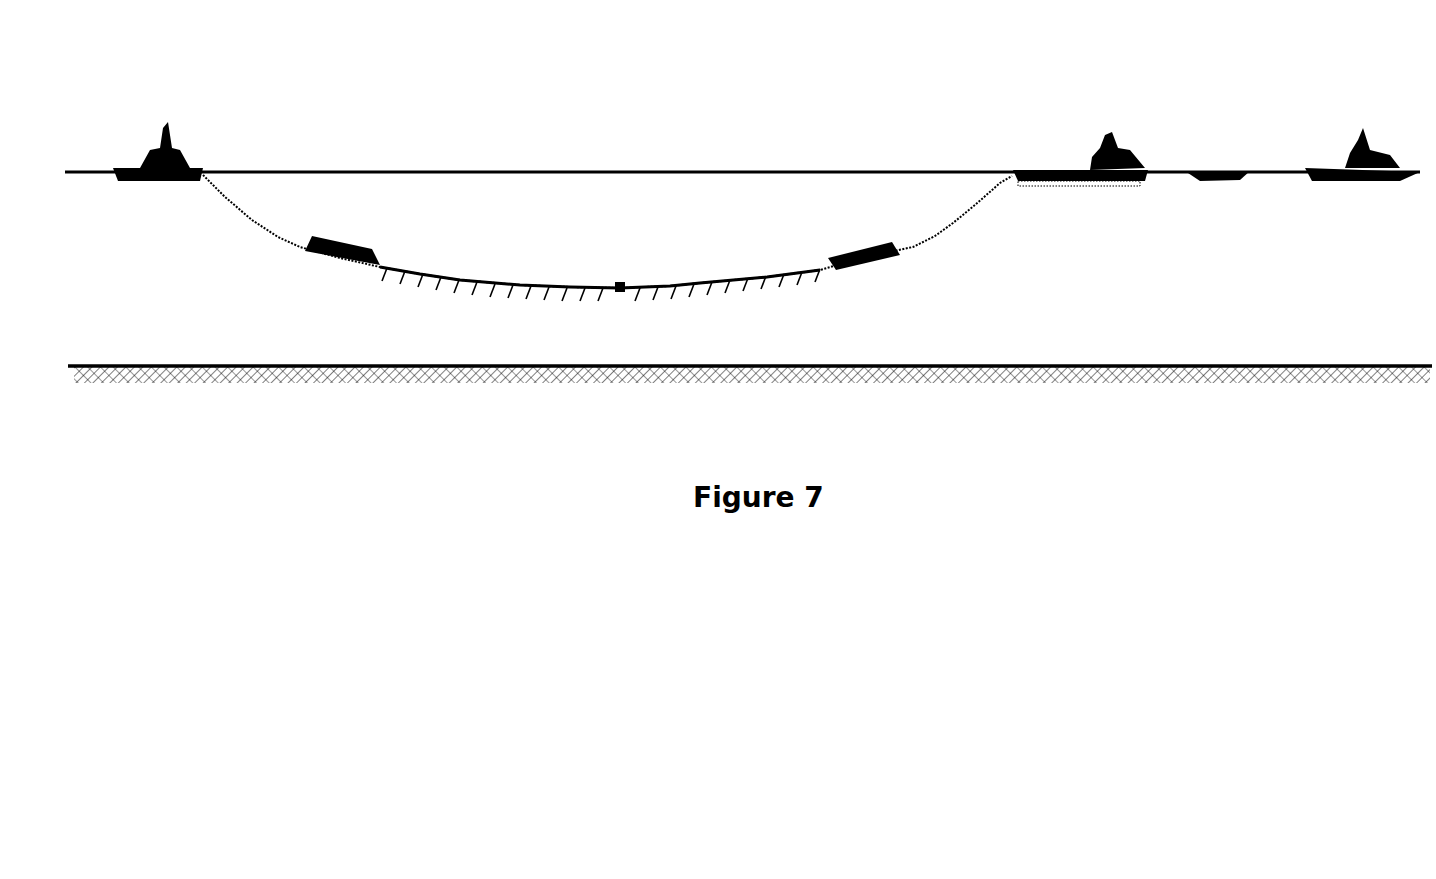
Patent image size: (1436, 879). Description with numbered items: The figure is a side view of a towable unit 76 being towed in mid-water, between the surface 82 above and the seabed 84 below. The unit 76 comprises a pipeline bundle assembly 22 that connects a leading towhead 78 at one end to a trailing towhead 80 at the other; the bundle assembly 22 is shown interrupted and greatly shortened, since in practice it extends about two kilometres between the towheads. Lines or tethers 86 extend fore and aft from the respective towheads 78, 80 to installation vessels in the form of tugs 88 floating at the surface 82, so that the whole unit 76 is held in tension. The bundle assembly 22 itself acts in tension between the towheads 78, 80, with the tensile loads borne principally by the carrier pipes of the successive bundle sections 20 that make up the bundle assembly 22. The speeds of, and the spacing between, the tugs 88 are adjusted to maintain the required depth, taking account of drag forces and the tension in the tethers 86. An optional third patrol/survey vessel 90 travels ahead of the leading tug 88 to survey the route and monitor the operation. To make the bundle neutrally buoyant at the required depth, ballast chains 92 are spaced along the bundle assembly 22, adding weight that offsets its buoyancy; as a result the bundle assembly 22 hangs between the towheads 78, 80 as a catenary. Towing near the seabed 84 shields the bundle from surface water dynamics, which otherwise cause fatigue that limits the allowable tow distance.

The bundle sections 20 is at (512, 284).
The pipeline bundle assembly 22 is at (621, 276).
The towable unit 76 is at (828, 116).
The leading towhead 78 is at (873, 259).
The trailing towhead 80 is at (335, 252).
The surface 82 is at (1217, 170).
The seabed 84 is at (1017, 368).
The tethers 86 is at (252, 222).
The tugs 88 is at (145, 166).
The patrol/survey vessel 90 is at (1335, 170).
The ballast chains 92 is at (515, 294).